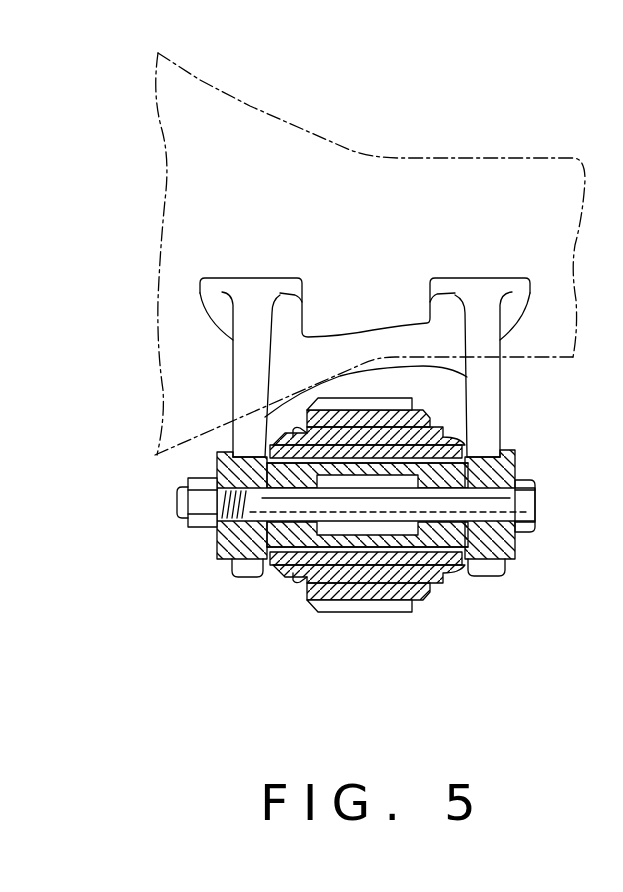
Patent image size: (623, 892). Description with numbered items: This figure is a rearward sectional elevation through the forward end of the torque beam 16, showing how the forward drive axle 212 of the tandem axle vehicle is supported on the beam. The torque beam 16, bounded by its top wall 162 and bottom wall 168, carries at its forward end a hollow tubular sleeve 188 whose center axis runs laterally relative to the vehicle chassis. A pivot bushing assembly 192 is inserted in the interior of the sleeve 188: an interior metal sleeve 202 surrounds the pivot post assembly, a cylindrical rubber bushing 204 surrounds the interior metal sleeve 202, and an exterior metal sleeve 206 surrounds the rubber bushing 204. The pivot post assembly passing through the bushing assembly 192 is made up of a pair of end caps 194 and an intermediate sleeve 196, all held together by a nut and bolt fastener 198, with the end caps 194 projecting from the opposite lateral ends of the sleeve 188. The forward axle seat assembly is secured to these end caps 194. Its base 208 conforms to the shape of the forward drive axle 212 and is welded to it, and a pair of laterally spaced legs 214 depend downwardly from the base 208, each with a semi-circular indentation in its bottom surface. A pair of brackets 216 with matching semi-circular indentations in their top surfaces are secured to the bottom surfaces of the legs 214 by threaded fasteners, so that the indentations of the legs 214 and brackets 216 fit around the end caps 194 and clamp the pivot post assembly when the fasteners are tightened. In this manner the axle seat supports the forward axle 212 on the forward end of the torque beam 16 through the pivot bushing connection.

The torque beam 16 is at (403, 611).
The top wall 162 is at (375, 398).
The bottom wall 168 is at (347, 615).
The hollow tubular sleeve 188 is at (432, 595).
The roller assembly 192 is at (542, 566).
The end caps 194 is at (213, 555).
The intermediate sleeve 196 is at (263, 557).
The nut and bolt fastener 198 is at (533, 507).
The interior metal sleeve 202 is at (333, 615).
The cylindrical rubber bushing 204 is at (445, 436).
The exterior metal sleeve 206 is at (384, 603).
The axle seat base 208 is at (329, 350).
The forward drive axle 212 is at (480, 198).
The axle seat legs 214 is at (243, 376).
The brackets 216 is at (230, 573).